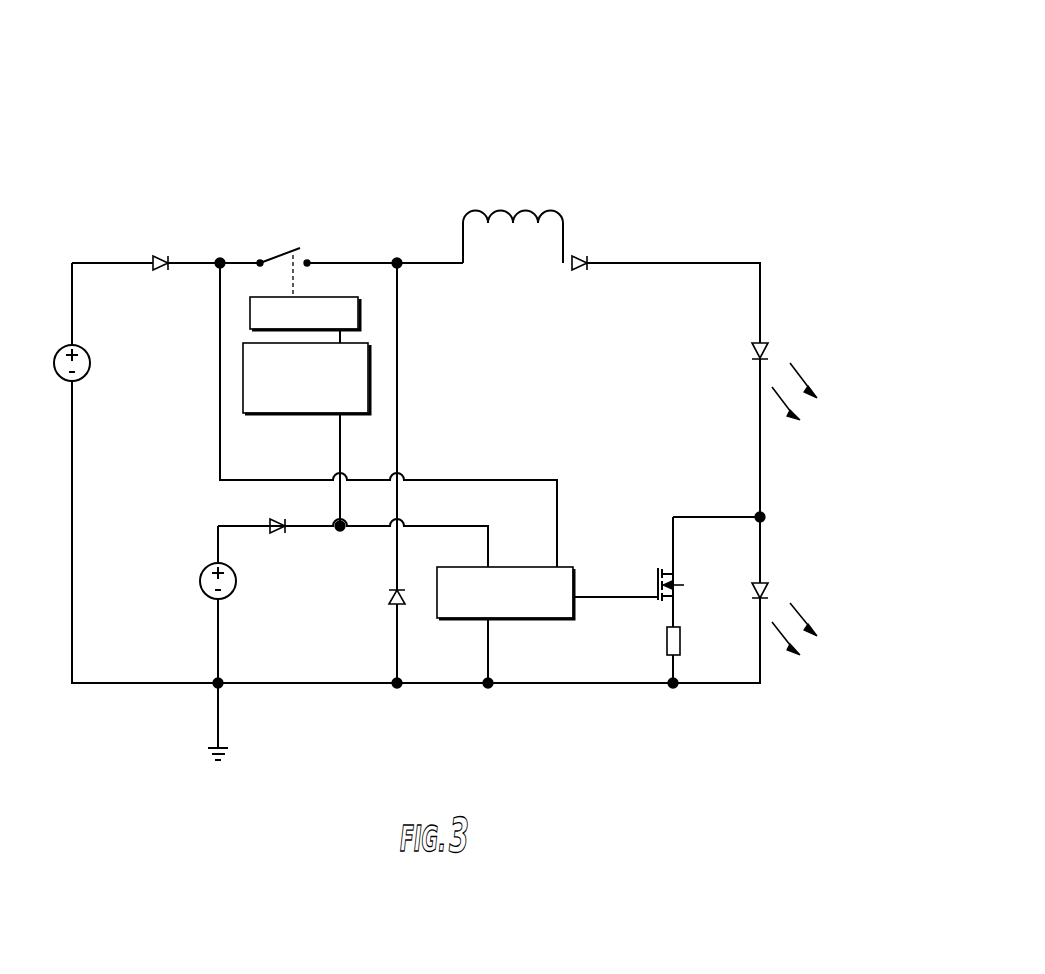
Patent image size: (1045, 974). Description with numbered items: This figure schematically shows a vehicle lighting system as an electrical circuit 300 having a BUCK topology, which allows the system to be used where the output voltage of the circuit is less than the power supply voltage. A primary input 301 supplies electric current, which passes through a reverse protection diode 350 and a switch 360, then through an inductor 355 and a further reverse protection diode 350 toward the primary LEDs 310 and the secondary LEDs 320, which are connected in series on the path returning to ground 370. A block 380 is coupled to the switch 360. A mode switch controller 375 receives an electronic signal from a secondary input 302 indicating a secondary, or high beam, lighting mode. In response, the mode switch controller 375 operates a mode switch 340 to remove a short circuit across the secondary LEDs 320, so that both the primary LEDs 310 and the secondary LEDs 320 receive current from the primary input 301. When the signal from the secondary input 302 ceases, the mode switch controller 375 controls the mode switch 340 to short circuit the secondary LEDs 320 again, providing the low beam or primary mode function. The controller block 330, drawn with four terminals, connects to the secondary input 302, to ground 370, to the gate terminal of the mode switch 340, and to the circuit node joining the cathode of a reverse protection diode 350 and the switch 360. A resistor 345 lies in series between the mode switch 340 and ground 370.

The electrical circuit 300 is at (687, 86).
The primary input 301 is at (56, 420).
The secondary input 302 is at (204, 643).
The primary LEDs 310 is at (829, 357).
The secondary LEDs 320 is at (829, 603).
The controller 330 is at (436, 656).
The mode switch 340 is at (656, 575).
The resistor 345 is at (665, 640).
The reverse protection diode 350 is at (155, 258).
The inductor 355 is at (524, 210).
The switch 360 is at (285, 248).
The ground 370 is at (234, 793).
The mode switch controller 375 is at (370, 397).
The switch driver block 380 is at (360, 312).